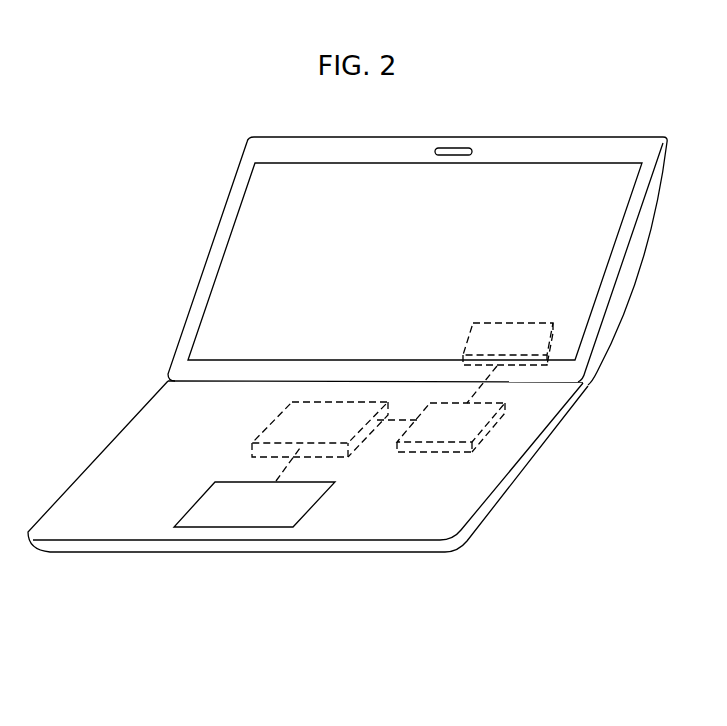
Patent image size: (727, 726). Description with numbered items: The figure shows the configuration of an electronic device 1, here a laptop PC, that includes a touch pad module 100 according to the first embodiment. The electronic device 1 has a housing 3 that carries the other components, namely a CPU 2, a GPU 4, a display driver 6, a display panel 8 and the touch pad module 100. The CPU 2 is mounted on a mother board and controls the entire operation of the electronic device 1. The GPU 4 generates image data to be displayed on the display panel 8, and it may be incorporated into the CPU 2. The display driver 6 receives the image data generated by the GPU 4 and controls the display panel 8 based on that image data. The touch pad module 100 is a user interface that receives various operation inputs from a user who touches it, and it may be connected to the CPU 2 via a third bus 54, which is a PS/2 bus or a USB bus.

The electronic device 1 is at (335, 692).
The CPU 2 is at (353, 428).
The housing 3 is at (538, 445).
The GPU 4 is at (443, 433).
The display driver 6 is at (535, 342).
The display panel 8 is at (567, 293).
The third bus 54 is at (283, 468).
The touch pad module 100 is at (248, 508).